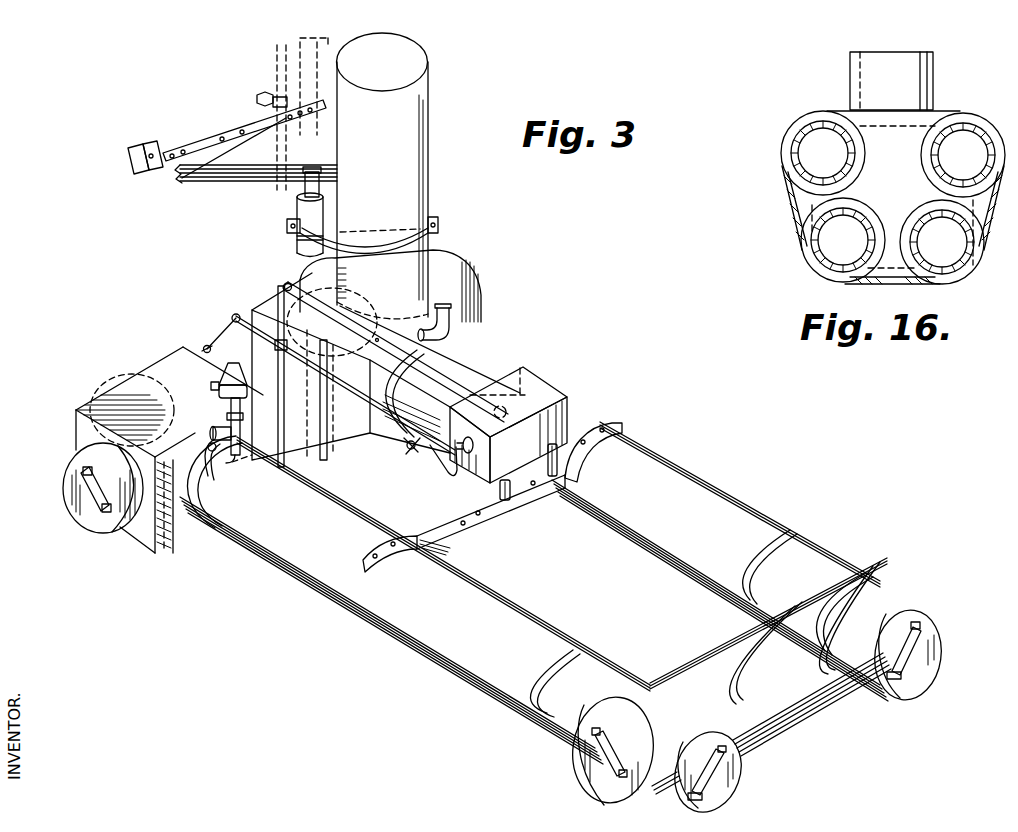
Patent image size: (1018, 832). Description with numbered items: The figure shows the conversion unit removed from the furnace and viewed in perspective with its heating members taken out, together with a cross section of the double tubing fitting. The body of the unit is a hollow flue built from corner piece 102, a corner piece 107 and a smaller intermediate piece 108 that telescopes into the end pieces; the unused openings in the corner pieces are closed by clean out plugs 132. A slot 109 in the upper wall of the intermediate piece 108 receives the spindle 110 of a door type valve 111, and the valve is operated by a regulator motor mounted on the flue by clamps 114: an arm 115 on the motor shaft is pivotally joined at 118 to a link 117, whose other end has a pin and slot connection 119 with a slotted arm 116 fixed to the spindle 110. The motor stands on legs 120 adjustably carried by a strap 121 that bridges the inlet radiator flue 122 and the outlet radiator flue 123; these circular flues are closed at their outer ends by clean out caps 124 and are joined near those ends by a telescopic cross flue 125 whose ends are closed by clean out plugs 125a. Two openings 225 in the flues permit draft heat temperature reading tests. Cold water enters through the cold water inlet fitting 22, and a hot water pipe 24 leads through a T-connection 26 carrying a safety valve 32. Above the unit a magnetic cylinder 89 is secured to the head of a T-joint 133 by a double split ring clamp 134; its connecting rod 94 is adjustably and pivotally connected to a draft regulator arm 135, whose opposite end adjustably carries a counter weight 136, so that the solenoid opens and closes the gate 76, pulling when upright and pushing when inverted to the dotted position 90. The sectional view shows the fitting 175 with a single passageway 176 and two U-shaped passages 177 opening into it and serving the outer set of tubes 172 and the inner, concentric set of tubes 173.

In FIG. 3, the T-joint 133 is at (431, 163).
In FIG. 3, the double split ring clamp 134 is at (301, 162).
In FIG. 3, the magnetic cylinder 89 is at (297, 248).
In FIG. 3, the connecting rod 94 is at (322, 172).
In FIG. 3, the conduit 90 is at (305, 57).
In FIG. 3, the draft regulator arm 135 is at (226, 172).
In FIG. 3, the gate 76 is at (250, 114).
In FIG. 3, the counter weight 136 is at (147, 173).
In FIG. 3, the clean out plugs 132 is at (300, 270).
In FIG. 3, the end or corner piece 107 is at (450, 283).
In FIG. 3, the cold water inlet fitting 22 is at (452, 313).
In FIG. 3, the pin and slot connection 119 is at (568, 408).
In FIG. 3, the clamps 114 is at (283, 289).
In FIG. 3, the link 117 is at (386, 434).
In FIG. 3, the pivotal connection 118 is at (410, 452).
In FIG. 3, the arm 115 is at (440, 474).
In FIG. 3, the slot 109 is at (300, 376).
In FIG. 3, the spindle 110 is at (327, 392).
In FIG. 3, the corner piece 102 is at (144, 539).
In FIG. 3, the door type valve 111 is at (172, 538).
In FIG. 3, the safety valve 32 is at (220, 372).
In FIG. 3, the hot water pipe 24 is at (227, 408).
In FIG. 3, the T-connection 26 is at (210, 433).
In FIG. 3, the openings 225 is at (200, 480).
In FIG. 3, the intermediate piece 108 is at (204, 343).
In FIG. 3, the slotted arm 116 is at (203, 348).
In FIG. 3, the inlet radiator flue 122 is at (300, 579).
In FIG. 3, the clean out plugs 125a is at (590, 770).
In FIG. 3, the outlet radiator flue 123 is at (734, 494).
In FIG. 3, the cross flue 125 is at (777, 693).
In FIG. 3, the clean out caps 124 is at (903, 676).
In FIG. 3, the strap 121 is at (470, 530).
In FIG. 3, the legs 120 is at (522, 492).
In FIG. 16, the single passageway 176 is at (850, 74).
In FIG. 16, the fitting 175 is at (850, 108).
In FIG. 16, the set of tubes 172 is at (808, 158).
In FIG. 16, the set of tubes 173 is at (828, 250).
In FIG. 16, the U-shaped passages 177 is at (812, 212).